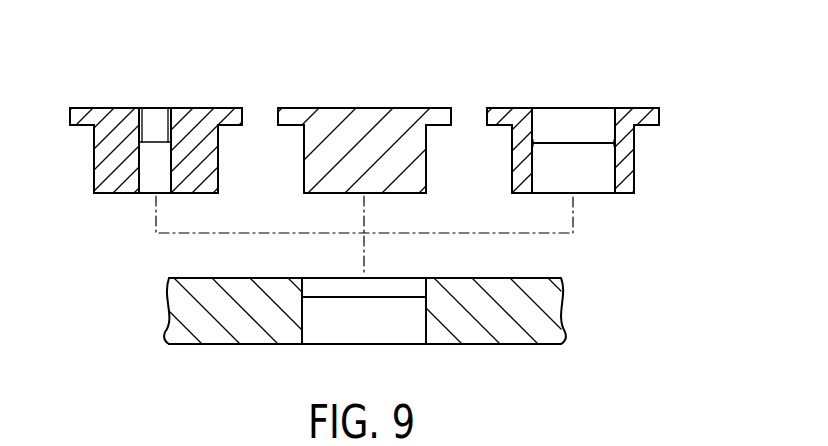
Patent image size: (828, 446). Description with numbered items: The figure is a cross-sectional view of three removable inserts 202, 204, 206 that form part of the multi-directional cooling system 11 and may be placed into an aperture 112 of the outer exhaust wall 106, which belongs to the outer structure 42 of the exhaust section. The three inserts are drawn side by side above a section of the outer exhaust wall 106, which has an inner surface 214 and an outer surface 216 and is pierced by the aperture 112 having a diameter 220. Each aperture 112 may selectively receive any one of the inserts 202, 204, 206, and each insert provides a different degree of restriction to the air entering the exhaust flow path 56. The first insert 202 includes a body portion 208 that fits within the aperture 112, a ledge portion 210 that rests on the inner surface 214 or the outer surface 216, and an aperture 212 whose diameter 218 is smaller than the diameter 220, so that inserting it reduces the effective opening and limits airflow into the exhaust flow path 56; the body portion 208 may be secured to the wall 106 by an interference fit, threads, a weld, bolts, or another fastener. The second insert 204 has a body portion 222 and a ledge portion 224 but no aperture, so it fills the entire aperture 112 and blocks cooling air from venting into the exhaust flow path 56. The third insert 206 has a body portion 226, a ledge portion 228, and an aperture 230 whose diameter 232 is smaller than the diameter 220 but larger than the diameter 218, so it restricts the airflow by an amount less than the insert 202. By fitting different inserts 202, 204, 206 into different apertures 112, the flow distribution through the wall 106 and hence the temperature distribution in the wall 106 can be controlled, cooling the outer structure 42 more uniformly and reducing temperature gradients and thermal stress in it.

The multi-directional cooling system 11 is at (136, 270).
The outer structure 42 is at (574, 316).
The exhaust flow path 56 is at (521, 413).
The outer exhaust wall 106 is at (200, 335).
The aperture 112 is at (410, 335).
The insert 202 is at (205, 72).
The insert 204 is at (383, 74).
The insert 206 is at (613, 74).
The body portion 208 is at (102, 153).
The ledge portion 210 is at (87, 108).
The aperture 212 is at (149, 185).
The inner surface 214 is at (548, 345).
The outer surface 216 is at (545, 279).
The diameter 218 is at (154, 140).
The diameter 220 is at (363, 300).
The body portion 222 is at (422, 180).
The ledge portion 224 is at (431, 108).
The body portion 226 is at (631, 162).
The ledge portion 228 is at (640, 108).
The aperture 230 is at (596, 188).
The diameter 232 is at (574, 140).